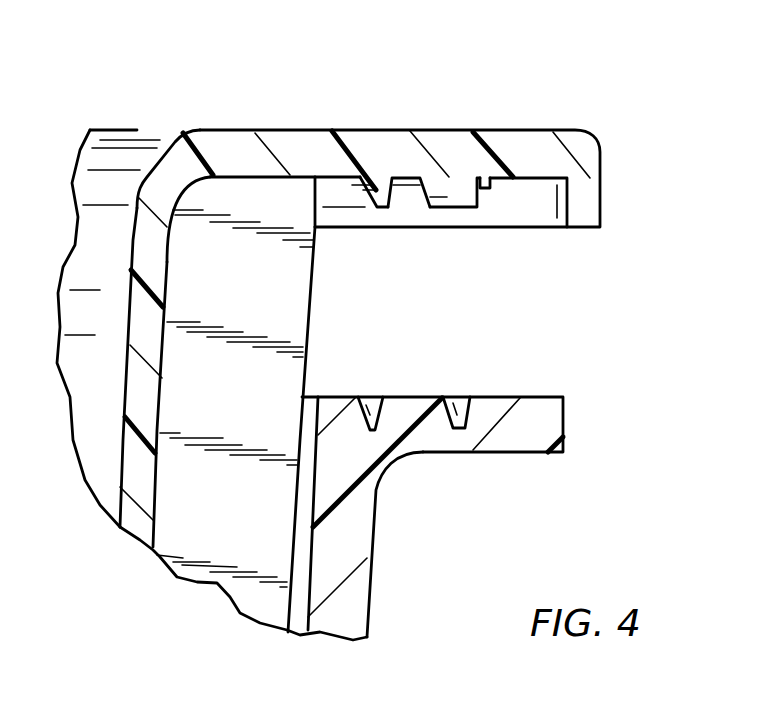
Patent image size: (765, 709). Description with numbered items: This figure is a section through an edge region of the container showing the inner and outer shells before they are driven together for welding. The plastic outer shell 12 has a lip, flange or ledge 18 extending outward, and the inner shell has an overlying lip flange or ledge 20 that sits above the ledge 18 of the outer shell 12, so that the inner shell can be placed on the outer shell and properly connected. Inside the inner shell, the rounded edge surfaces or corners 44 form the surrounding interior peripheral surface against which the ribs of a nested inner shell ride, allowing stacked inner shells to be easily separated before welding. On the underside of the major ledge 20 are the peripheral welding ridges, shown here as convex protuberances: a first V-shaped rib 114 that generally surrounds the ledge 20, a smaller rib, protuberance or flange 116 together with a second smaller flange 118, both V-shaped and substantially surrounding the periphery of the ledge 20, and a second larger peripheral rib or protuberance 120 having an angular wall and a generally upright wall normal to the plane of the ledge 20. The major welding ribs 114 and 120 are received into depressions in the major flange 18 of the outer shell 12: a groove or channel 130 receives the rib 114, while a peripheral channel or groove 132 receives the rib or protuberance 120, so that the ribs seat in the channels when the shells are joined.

The outer shell 12 is at (366, 558).
The lip flange or ledge 18 is at (565, 422).
The overlying lip flange or ledge 20 is at (527, 128).
The rounded edge surfaces or corners 44 is at (120, 155).
The V-shaped rib 114 is at (380, 190).
The smaller rib, protuberance or flange 116 is at (430, 207).
The second smaller flange 118 is at (485, 188).
The second larger peripheral rib or protuberance 120 is at (467, 203).
The groove or channel 130 is at (376, 397).
The peripheral channel or groove 132 is at (465, 397).